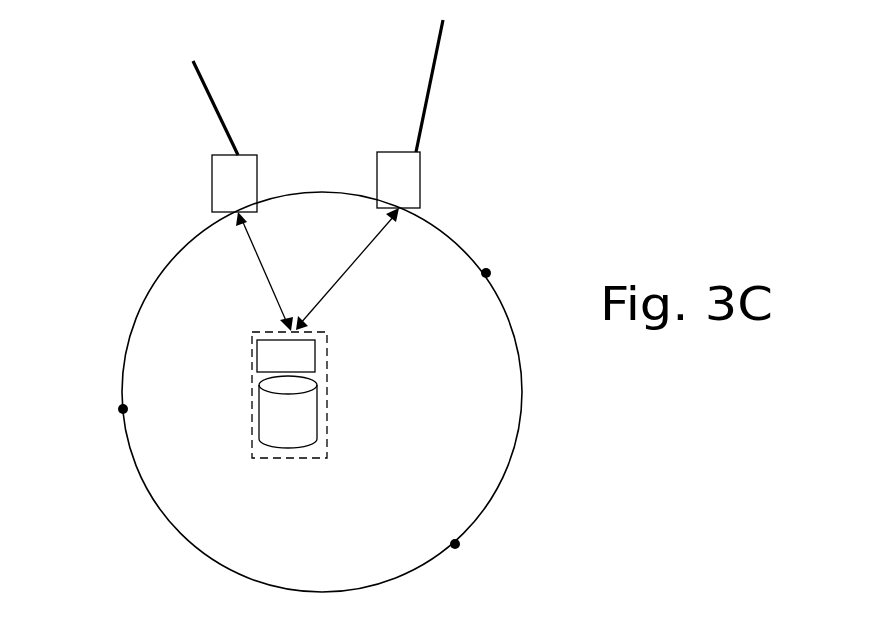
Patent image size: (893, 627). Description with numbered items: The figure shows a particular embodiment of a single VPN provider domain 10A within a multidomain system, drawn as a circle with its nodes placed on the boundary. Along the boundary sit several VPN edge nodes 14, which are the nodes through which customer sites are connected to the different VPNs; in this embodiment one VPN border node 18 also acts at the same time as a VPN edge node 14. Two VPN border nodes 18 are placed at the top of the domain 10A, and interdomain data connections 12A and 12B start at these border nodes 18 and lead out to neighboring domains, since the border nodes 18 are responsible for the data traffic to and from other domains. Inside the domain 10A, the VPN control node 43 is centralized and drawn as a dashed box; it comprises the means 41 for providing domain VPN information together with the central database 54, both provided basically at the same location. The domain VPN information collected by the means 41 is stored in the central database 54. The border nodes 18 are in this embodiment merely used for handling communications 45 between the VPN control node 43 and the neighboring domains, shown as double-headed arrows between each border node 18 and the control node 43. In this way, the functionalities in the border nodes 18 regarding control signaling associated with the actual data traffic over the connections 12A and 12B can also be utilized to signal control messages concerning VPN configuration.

The VPN provider domain 10A is at (510, 378).
The interdomain data connection 12A is at (430, 83).
The interdomain data connection 12B is at (192, 70).
The VPN edge node 14 is at (120, 409).
The VPN border node 18 is at (243, 154).
The means for providing domain VPN information 41 is at (268, 338).
The VPN control node 43 is at (300, 459).
The communications 45 is at (362, 242).
The central database 54 is at (290, 459).